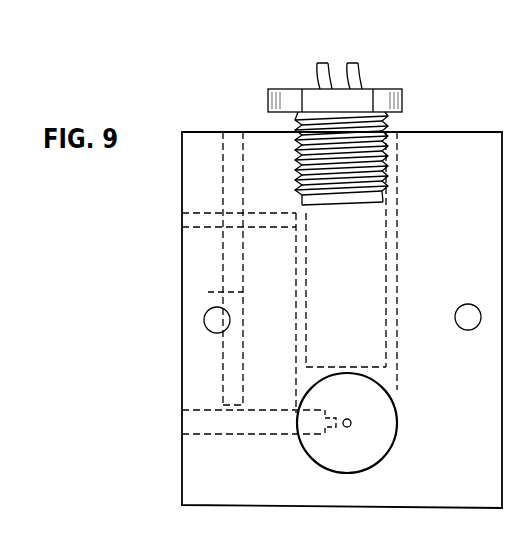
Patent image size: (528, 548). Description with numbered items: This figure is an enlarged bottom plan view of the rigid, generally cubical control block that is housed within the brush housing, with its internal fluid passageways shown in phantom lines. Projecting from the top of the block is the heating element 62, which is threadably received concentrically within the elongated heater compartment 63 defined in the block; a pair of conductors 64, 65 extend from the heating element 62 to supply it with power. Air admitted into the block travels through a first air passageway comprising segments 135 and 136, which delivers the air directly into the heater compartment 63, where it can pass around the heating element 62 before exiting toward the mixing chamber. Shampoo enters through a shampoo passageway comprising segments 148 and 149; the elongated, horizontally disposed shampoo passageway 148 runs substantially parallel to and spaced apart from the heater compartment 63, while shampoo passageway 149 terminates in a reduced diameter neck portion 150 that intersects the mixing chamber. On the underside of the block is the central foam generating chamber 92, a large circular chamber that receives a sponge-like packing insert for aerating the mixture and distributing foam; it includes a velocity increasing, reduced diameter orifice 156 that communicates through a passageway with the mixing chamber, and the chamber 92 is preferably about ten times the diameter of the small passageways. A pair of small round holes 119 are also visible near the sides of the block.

The heating element 62 is at (392, 121).
The heater compartment 63 is at (397, 266).
The conductor 64 is at (359, 72).
The conductor 65 is at (318, 77).
The foam generating chamber 92 is at (367, 448).
The mounting holes 119 is at (210, 322).
The first air passageway segment 135 is at (268, 228).
The first air passageway segment 136 is at (243, 191).
The shampoo passageway 148 is at (216, 279).
The shampoo passageway 149 is at (266, 435).
The reduced diameter neck portion 150 is at (335, 428).
The reduced diameter orifice 156 is at (351, 423).